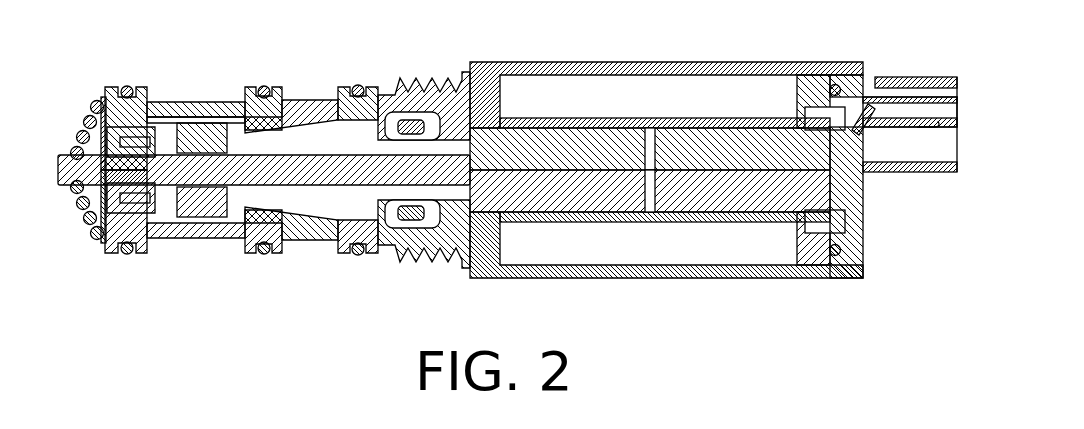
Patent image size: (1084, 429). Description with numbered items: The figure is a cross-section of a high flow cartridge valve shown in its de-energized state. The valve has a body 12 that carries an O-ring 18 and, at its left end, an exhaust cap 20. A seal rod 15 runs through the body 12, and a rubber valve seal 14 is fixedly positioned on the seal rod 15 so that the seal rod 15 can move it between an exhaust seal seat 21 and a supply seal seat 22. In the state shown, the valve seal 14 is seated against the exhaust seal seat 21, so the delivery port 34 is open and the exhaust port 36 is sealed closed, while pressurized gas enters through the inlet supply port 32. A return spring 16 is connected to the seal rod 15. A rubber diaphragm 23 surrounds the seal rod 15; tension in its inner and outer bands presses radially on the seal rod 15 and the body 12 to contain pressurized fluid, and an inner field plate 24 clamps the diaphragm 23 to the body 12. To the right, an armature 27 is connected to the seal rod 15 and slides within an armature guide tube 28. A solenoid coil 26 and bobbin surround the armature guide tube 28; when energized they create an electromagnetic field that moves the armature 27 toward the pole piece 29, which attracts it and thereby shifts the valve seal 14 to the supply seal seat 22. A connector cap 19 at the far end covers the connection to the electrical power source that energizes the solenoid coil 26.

The body 12 is at (240, 98).
The valve seal 14 is at (197, 207).
The seal rod 15 is at (60, 187).
The return spring 16 is at (80, 128).
The O-ring 18 is at (130, 86).
The connector cap 19 is at (912, 107).
The exhaust cap 20 is at (116, 213).
The exhaust seal seat 21 is at (172, 212).
The supply seal seat 22 is at (236, 215).
The diaphragm 23 is at (388, 102).
The inner field plate 24 is at (462, 232).
The solenoid coil 26 is at (575, 95).
The armature 27 is at (612, 178).
The armature guide tube 28 is at (775, 124).
The pole piece 29 is at (750, 178).
The inlet supply port 32 is at (314, 205).
The delivery port 34 is at (217, 220).
The exhaust port 36 is at (100, 228).